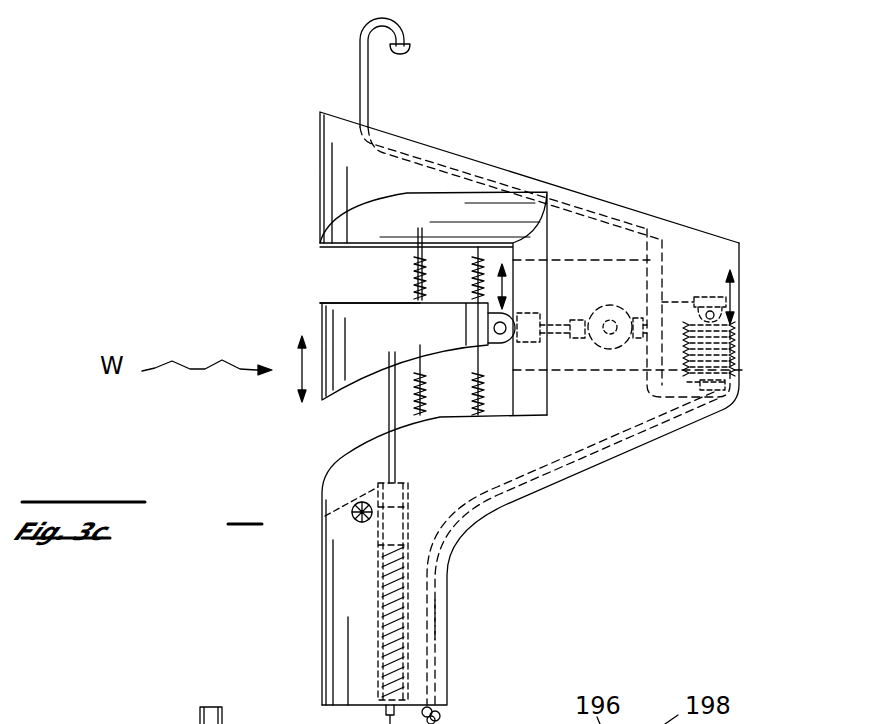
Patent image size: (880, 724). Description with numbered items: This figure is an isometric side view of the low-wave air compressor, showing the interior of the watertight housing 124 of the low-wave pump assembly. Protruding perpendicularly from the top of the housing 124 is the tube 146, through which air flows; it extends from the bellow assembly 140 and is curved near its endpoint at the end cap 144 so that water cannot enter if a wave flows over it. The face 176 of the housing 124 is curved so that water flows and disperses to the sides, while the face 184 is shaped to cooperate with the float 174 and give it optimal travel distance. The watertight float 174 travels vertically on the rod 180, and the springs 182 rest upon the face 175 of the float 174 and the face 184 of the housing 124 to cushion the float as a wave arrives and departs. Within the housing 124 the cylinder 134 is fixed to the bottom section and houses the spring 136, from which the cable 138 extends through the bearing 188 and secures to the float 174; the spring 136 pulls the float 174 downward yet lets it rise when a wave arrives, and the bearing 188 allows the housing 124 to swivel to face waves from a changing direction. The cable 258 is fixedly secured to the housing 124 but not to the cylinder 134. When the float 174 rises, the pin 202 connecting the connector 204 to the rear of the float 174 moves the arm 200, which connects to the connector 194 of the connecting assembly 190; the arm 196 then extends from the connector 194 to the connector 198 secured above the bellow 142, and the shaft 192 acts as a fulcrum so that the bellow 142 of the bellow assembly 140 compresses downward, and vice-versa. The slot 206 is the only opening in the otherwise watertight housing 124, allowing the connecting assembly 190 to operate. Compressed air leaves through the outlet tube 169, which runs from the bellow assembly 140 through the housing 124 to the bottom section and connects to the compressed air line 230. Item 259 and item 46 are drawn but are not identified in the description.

The housing 124 is at (487, 163).
The tube 146 is at (359, 50).
The end cap 144 is at (408, 54).
The face 176 is at (433, 303).
The slot 206 is at (612, 276).
The shaft 192 is at (660, 222).
The connector 194 is at (672, 248).
The connector 198 is at (728, 268).
The arm 196 is at (715, 278).
The bellow assembly 140 is at (736, 345).
The bellow 142 is at (746, 369).
The arm 200 is at (556, 312).
The connector 204 is at (527, 342).
The pin 202 is at (499, 337).
The rod 180 is at (413, 252).
The springs 182 is at (412, 279).
The float 174 is at (404, 351).
The face 175 is at (324, 303).
The cable 138 is at (390, 395).
The face 184 is at (335, 465).
The connecting assembly 190 is at (607, 350).
The outlet tube 169 is at (500, 497).
The spring 136 is at (410, 623).
The bearing 188 is at (412, 490).
The spring 259 is at (410, 695).
The cylinder 134 is at (378, 535).
The compressed air line 230 is at (460, 723).
The cable 258 is at (374, 715).
The bracket 46 is at (198, 720).